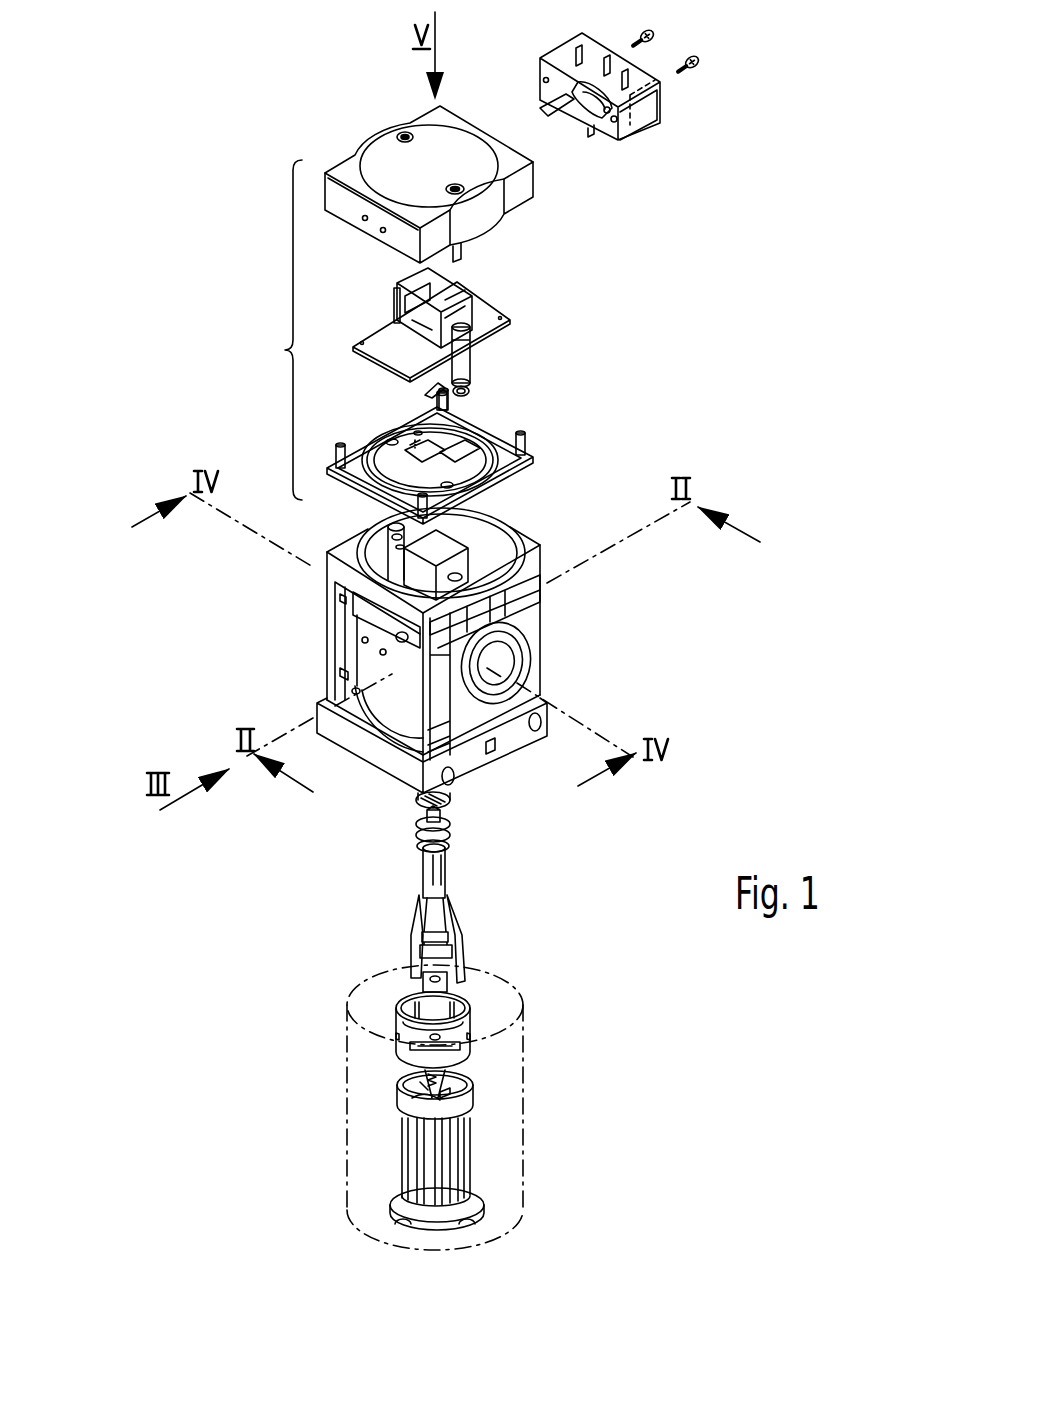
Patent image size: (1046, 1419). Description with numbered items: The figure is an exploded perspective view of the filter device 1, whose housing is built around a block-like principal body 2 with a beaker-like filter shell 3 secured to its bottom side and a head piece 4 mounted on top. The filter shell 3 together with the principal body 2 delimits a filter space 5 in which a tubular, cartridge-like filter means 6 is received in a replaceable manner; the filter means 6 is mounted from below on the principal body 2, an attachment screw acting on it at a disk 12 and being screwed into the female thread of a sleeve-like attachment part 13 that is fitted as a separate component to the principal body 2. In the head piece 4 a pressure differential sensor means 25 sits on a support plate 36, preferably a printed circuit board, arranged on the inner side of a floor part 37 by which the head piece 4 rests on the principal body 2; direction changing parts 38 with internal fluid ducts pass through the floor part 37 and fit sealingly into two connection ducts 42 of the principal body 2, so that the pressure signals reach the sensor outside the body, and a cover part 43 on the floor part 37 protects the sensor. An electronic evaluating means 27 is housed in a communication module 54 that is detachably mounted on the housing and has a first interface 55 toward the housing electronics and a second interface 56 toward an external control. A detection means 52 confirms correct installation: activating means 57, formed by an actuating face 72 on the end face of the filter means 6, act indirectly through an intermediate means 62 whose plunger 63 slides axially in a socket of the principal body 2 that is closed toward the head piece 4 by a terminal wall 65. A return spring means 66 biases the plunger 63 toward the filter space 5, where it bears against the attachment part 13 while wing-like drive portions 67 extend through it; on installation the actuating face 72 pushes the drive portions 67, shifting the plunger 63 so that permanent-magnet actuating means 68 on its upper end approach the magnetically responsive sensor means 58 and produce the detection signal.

The filter device 1 is at (590, 396).
The principal body 2 is at (337, 628).
The filter shell 3 is at (520, 1062).
The head piece 4 is at (285, 330).
The filter space 5 is at (384, 997).
The filter means 6 is at (470, 1153).
The disk 12 is at (465, 1222).
The attachment part 13 is at (468, 1010).
The pressure differential sensor means 25 is at (478, 289).
The electronic evaluating means 27 is at (668, 112).
The support plate 36 is at (490, 316).
The floor part 37 is at (536, 466).
The direction changing parts 38 is at (392, 298).
The connection ducts 42 is at (380, 556).
The cover part 43 is at (538, 186).
The detection means 52 is at (482, 398).
The communication module 54 is at (597, 98).
The first interface 55 is at (536, 103).
The second interface 56 is at (640, 60).
The activating means 57 is at (350, 1074).
The sensor means 58 is at (414, 392).
The intermediate means 62 is at (408, 875).
The plunger 63 is at (441, 892).
The terminal wall 65 is at (432, 553).
The return spring means 66 is at (452, 813).
The drive portions 67 is at (415, 957).
The actuating means 68 is at (444, 832).
The actuating face 72 is at (400, 1083).